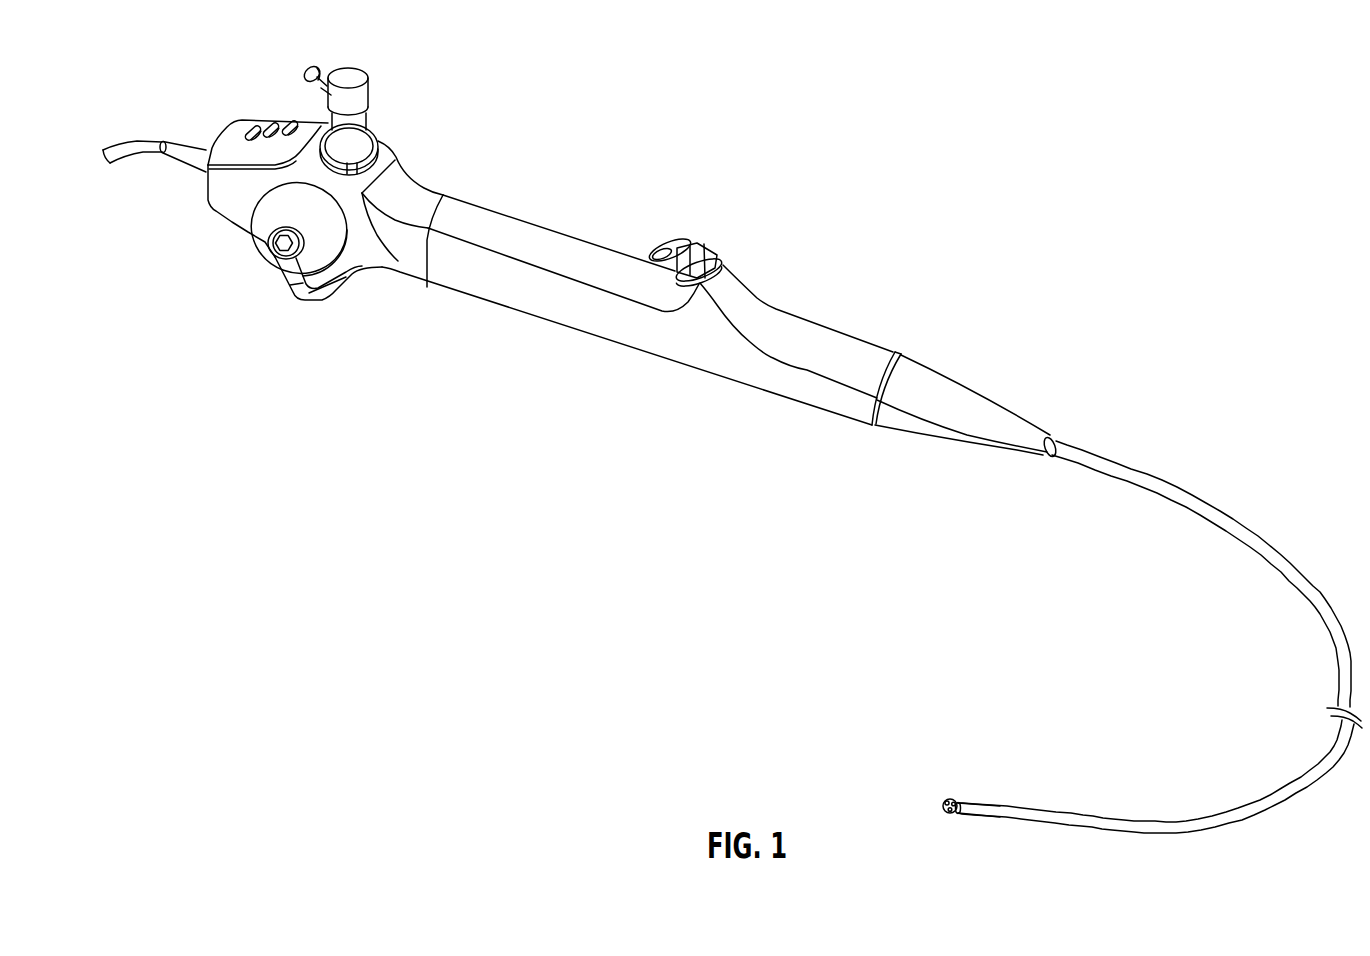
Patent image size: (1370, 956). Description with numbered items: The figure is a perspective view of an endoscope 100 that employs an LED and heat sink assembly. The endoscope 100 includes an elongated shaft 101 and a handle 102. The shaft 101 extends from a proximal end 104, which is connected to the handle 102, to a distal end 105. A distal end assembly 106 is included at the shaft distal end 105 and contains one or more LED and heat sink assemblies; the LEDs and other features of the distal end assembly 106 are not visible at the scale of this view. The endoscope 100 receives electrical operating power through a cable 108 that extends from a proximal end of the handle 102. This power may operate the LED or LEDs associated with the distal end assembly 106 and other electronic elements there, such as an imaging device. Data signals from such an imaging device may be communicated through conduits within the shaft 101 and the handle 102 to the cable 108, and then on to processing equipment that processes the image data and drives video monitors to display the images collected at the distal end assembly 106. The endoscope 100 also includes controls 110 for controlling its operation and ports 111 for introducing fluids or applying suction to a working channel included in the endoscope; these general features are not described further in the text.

The endoscope 100 is at (641, 189).
The elongated shaft 101 is at (1173, 495).
The handle 102 is at (518, 221).
The proximal end 104 is at (1090, 414).
The distal end 105 is at (978, 783).
The distal end assembly 106 is at (950, 798).
The cable 108 is at (130, 143).
The controls 110 is at (263, 106).
The ports 111 is at (360, 71).